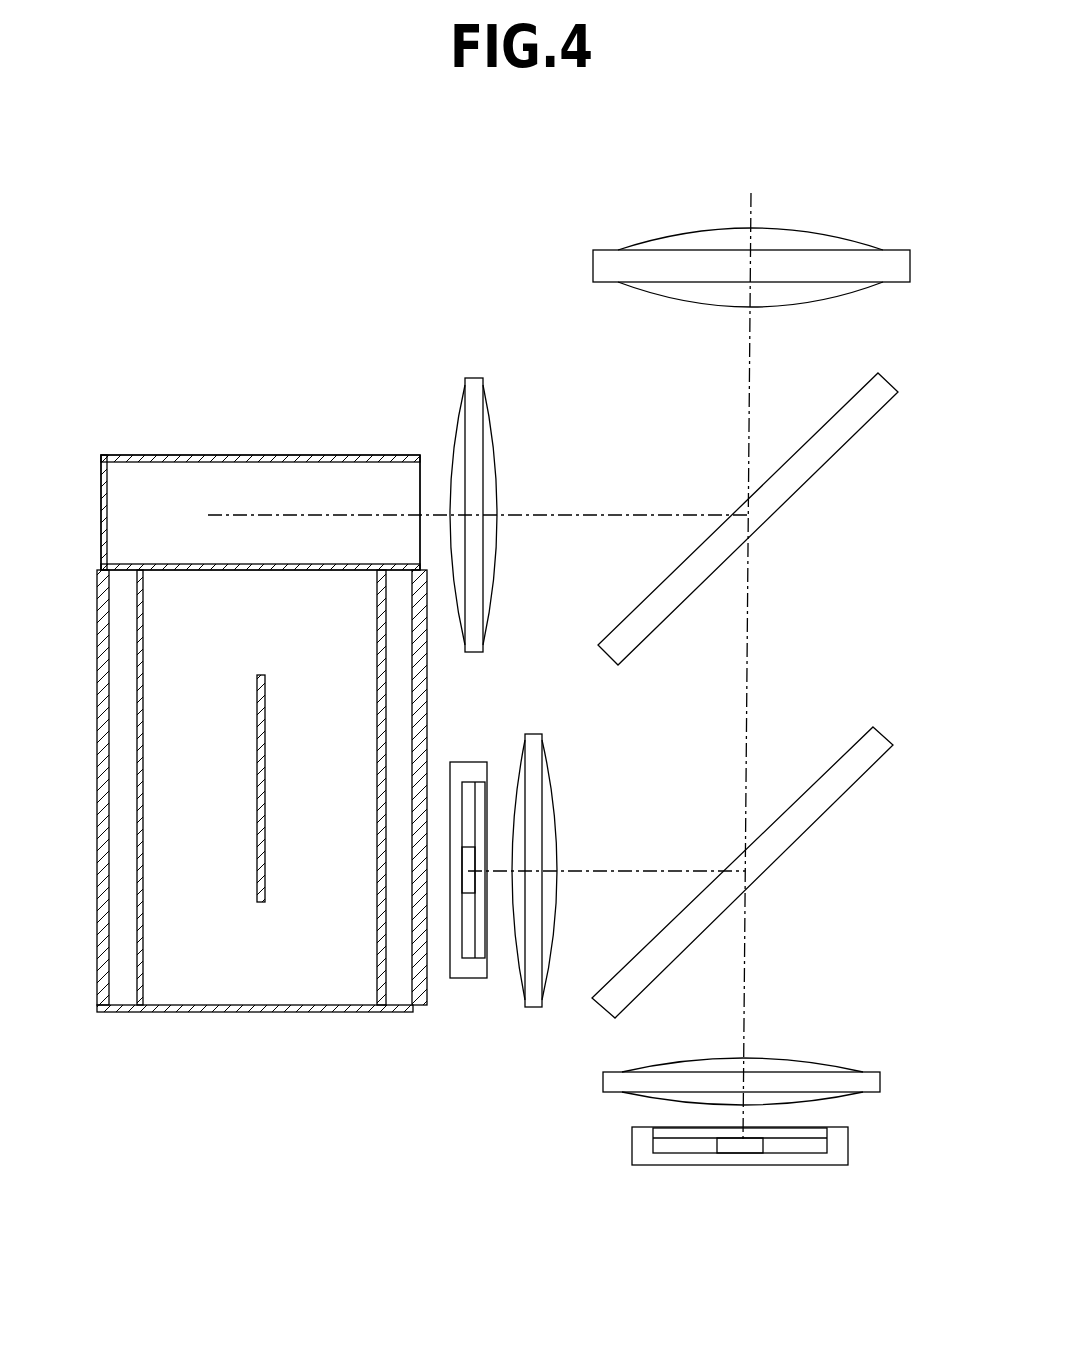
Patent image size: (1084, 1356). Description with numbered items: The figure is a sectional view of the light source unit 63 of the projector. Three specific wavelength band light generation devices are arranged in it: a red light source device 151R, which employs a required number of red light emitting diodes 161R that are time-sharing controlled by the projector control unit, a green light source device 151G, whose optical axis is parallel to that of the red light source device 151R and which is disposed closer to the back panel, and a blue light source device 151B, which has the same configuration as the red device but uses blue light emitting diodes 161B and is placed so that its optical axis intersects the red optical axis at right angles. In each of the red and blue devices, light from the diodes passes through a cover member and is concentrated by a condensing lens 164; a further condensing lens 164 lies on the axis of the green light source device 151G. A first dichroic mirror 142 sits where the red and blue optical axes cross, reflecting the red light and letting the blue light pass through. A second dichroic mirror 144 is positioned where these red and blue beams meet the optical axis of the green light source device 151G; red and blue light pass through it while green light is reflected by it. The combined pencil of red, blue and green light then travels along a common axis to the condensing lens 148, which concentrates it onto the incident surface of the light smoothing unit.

The light source unit 63 is at (249, 339).
The condensing lens 148 is at (840, 268).
The condensing lens 164 is at (475, 388).
The second dichroic mirror 144 is at (810, 455).
The first dichroic mirror 142 is at (812, 805).
The green light source device 151G is at (232, 968).
The red light source device 151R is at (497, 988).
The red light emitting diodes 161R is at (469, 880).
The blue light source device 151B is at (835, 1155).
The blue light emitting diodes 161B is at (753, 1146).